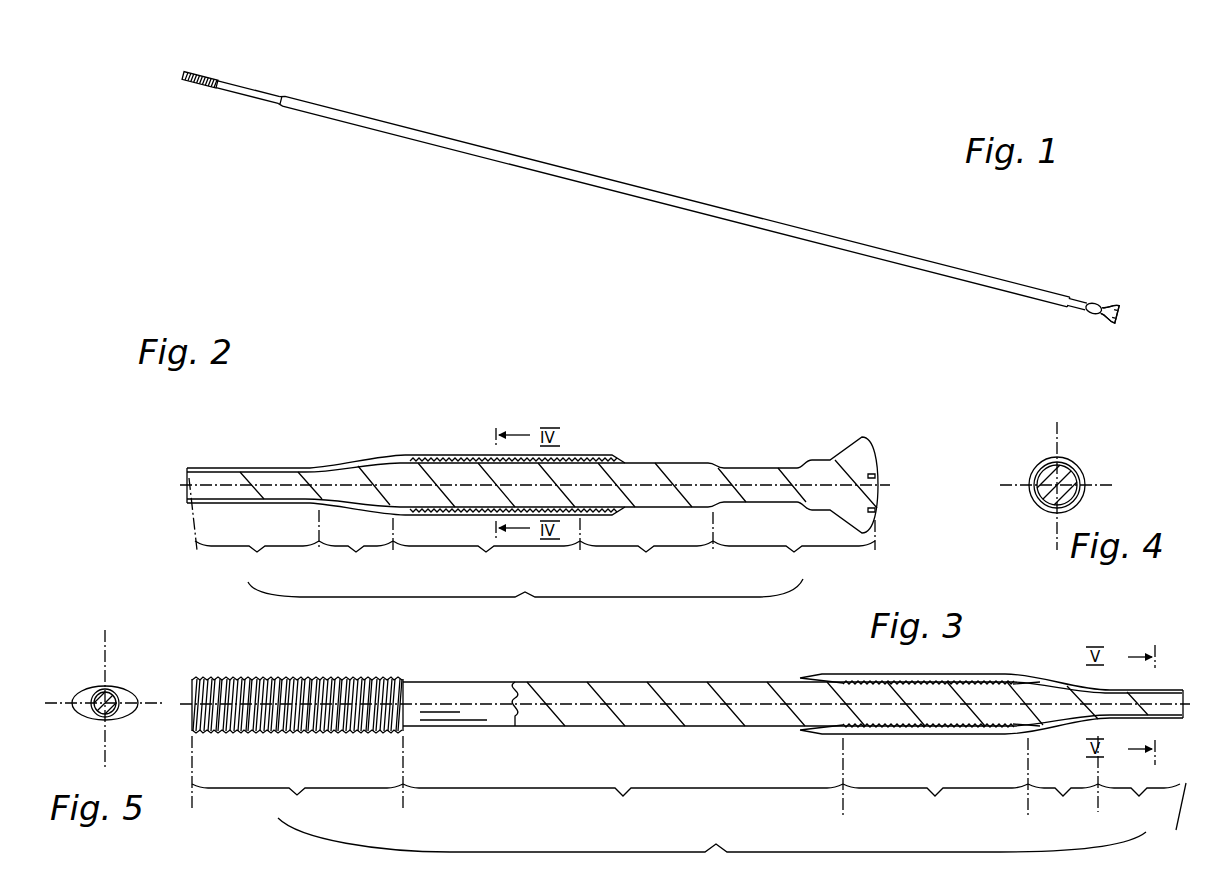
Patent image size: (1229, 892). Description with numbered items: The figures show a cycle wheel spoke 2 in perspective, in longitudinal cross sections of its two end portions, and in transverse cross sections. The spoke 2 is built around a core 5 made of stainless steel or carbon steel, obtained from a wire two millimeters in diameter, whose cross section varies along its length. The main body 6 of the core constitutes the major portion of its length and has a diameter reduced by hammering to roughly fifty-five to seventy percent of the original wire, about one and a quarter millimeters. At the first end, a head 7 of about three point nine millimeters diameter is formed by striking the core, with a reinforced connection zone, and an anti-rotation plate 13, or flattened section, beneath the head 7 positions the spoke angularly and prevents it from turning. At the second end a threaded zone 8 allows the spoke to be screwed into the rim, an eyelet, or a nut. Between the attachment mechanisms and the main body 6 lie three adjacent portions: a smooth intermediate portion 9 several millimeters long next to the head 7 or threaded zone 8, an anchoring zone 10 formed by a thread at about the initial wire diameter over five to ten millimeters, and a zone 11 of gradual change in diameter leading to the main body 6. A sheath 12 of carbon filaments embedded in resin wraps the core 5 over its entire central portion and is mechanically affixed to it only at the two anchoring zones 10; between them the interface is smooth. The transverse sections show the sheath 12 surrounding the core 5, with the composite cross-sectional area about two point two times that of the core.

In FIG. 1, the spoke 2 is at (703, 187).
In FIG. 1, the core 5 is at (238, 97).
In FIG. 2, the core 5 is at (532, 536).
In FIG. 3, the core 5 is at (689, 779).
In FIG. 4, the core 5 is at (1060, 462).
In FIG. 5, the core 5 is at (100, 690).
In FIG. 2, the main body 6 is at (254, 528).
In FIG. 3, the main body 6 is at (1142, 760).
In FIG. 2, the head 7 is at (795, 511).
In FIG. 3, the threaded zone 8 is at (297, 749).
In FIG. 2, the intermediate portion 9 is at (646, 548).
In FIG. 3, the intermediate portion 9 is at (792, 757).
In FIG. 2, the anchoring zone 10 is at (509, 519).
In FIG. 3, the anchoring zone 10 is at (920, 750).
In FIG. 2, the zone of gradual change in diameter 11 is at (357, 516).
In FIG. 3, the zone of gradual change in diameter 11 is at (1057, 750).
In FIG. 4, the sheath 12 is at (1086, 483).
In FIG. 5, the sheath 12 is at (90, 696).
In FIG. 1, the anti-rotation plate 13 is at (1106, 303).
In FIG. 2, the anti-rotation plate 13 is at (757, 468).